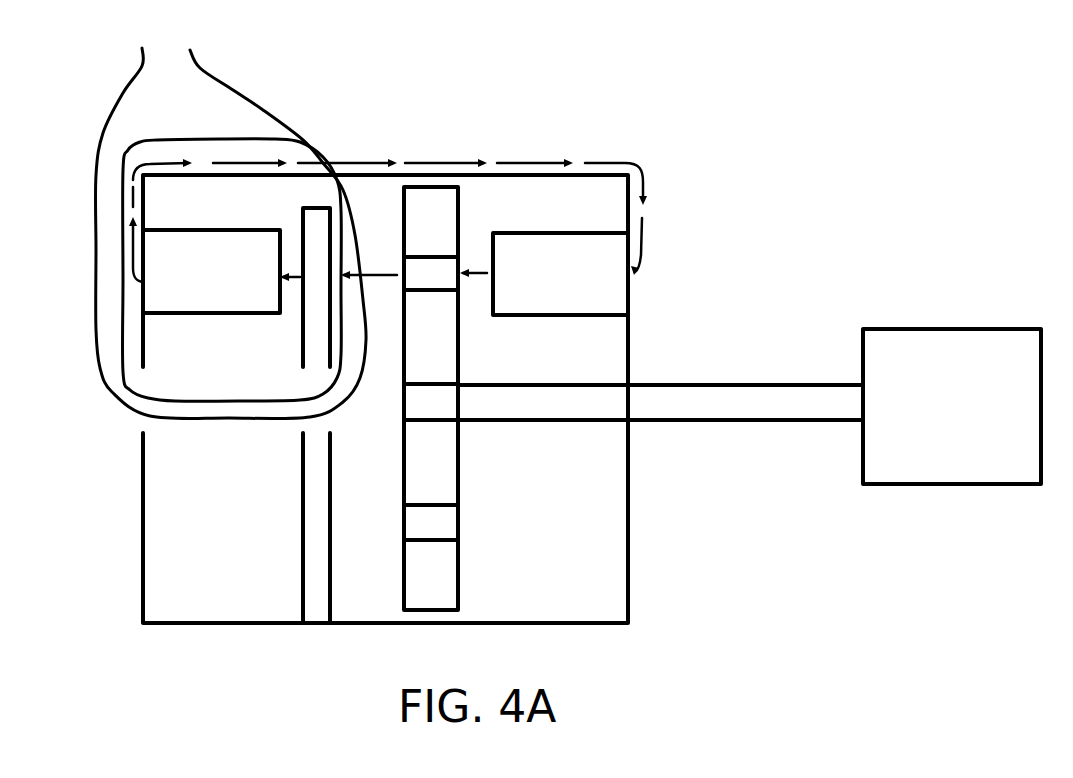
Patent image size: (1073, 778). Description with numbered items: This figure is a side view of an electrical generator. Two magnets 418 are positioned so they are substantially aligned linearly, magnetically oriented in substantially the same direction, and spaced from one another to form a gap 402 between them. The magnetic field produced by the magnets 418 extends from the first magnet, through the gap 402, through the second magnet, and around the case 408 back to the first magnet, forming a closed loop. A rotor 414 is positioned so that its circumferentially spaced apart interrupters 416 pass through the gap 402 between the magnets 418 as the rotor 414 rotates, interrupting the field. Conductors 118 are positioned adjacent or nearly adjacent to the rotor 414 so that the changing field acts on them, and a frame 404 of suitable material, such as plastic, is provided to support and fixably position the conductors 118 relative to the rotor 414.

The conductor 118 is at (232, 110).
The gap 402 is at (385, 189).
The frame 404 is at (303, 527).
The case 408 is at (628, 345).
The rotor 414 is at (458, 462).
The interrupter 416 is at (458, 282).
The magnet 418 is at (197, 315).